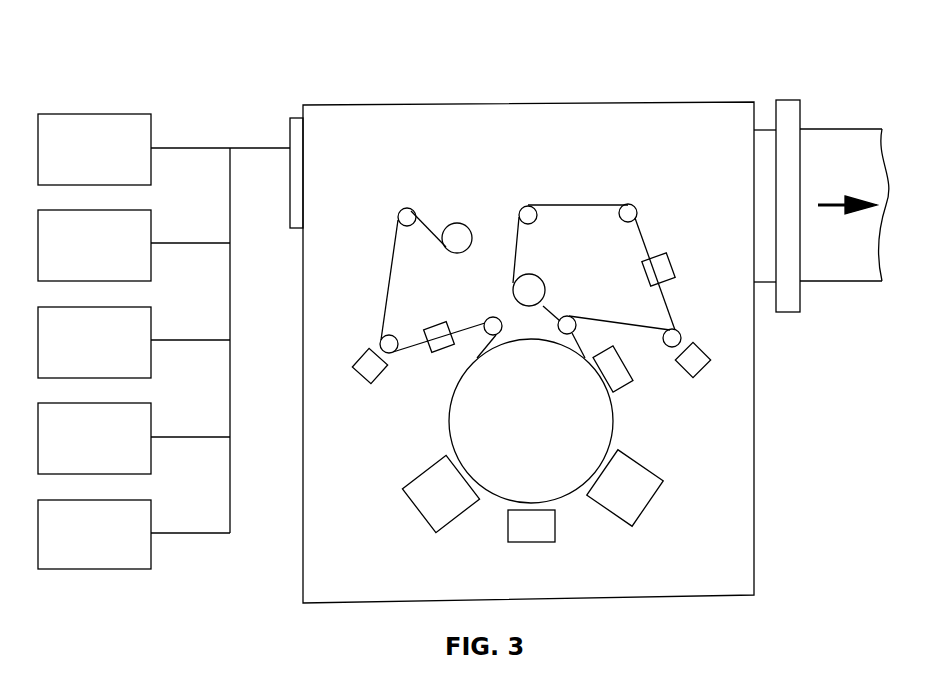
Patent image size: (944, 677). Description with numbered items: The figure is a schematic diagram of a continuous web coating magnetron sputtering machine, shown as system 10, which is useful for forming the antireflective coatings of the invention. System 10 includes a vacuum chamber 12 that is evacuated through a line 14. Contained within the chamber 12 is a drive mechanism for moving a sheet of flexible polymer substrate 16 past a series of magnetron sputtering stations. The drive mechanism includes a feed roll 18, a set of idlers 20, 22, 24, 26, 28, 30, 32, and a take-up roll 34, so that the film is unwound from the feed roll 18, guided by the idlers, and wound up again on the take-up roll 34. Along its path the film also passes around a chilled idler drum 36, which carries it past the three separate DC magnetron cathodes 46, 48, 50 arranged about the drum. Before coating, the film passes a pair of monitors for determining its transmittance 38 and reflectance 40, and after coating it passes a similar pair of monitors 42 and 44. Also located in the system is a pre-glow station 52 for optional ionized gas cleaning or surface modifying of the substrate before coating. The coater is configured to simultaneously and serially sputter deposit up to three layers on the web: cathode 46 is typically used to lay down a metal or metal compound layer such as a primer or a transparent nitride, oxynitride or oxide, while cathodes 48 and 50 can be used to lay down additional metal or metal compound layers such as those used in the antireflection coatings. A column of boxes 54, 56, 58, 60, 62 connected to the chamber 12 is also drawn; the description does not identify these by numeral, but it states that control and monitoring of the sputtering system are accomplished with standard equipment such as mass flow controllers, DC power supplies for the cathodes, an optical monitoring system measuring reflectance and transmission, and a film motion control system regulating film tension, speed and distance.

The system 10 is at (478, 88).
The vacuum chamber 12 is at (590, 112).
The line 14 is at (822, 150).
The flexible polymer substrate 16 is at (583, 205).
The feed roll 18 is at (535, 279).
The idler 20 is at (529, 206).
The idler 22 is at (635, 207).
The idler 24 is at (680, 330).
The idler 26 is at (572, 318).
The idler 28 is at (488, 318).
The idler 30 is at (395, 355).
The idler 32 is at (405, 208).
The take-up roll 34 is at (455, 232).
The chilled idler drum 36 is at (605, 430).
The transmittance monitor 38 is at (668, 268).
The reflectance monitor 40 is at (700, 361).
The monitor 42 is at (440, 352).
The monitor 44 is at (362, 374).
The DC magnetron cathode 46 is at (628, 505).
The DC magnetron cathode 48 is at (525, 535).
The DC magnetron cathode 50 is at (425, 510).
The pre-glow station 52 is at (625, 368).
The controller unit 54 is at (148, 131).
The controller unit 56 is at (148, 233).
The controller unit 58 is at (148, 326).
The controller unit 60 is at (148, 421).
The controller unit 62 is at (148, 518).